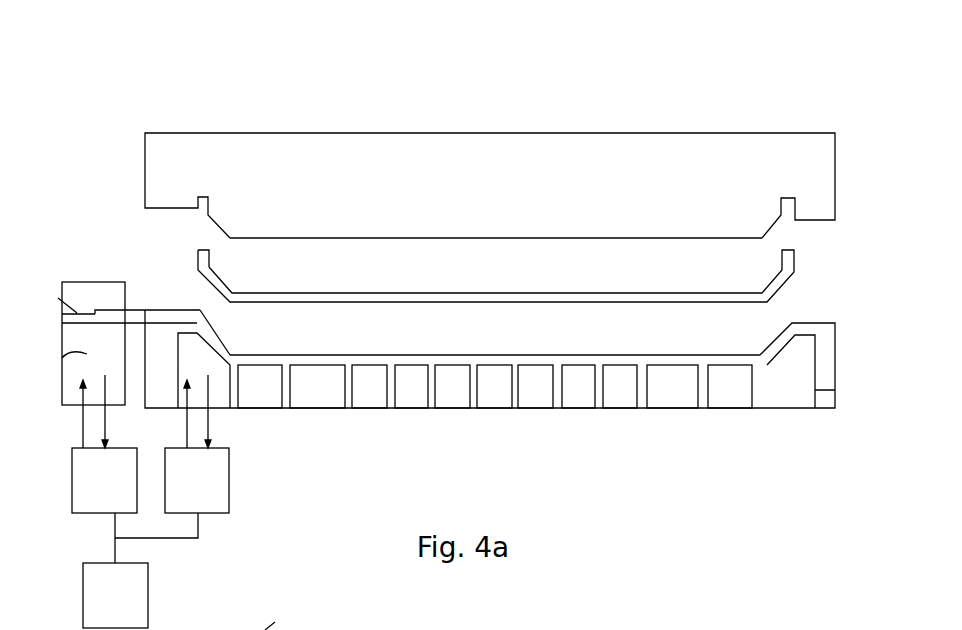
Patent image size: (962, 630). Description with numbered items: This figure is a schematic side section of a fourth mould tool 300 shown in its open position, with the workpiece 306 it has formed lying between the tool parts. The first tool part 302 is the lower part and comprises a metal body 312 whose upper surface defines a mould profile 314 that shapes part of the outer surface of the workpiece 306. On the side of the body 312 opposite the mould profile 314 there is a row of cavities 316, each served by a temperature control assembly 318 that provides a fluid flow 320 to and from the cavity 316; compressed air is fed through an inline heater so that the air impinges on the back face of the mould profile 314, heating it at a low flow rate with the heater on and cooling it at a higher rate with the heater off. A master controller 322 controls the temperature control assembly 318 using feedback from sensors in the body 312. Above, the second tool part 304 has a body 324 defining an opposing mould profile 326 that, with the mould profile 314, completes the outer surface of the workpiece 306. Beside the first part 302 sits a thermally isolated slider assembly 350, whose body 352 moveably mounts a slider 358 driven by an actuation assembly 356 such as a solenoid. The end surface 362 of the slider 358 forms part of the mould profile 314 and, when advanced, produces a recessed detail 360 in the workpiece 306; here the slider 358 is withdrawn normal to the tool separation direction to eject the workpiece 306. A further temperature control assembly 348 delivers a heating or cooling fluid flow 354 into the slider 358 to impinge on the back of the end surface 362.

The fourth mould tool 300 is at (772, 113).
The first tool part 302 is at (845, 363).
The second tool part 304 is at (850, 180).
The workpiece 306 is at (808, 263).
The body 312 is at (842, 395).
The mould profile 314 is at (377, 350).
The cavity 316 is at (217, 393).
The temperature control assembly 318 is at (197, 480).
The fluid flow 320 is at (230, 447).
The master controller 322 is at (140, 570).
The body 324 is at (490, 185).
The opposing mould profile 326 is at (380, 240).
The temperature control assembly 348 is at (104, 480).
The slider assembly 350 is at (52, 338).
The body 352 is at (62, 358).
The fluid flow 354 is at (88, 426).
The actuation assembly 356 is at (60, 303).
The slider 358 is at (147, 317).
The recessed detail 360 is at (200, 263).
The end surface 362 is at (210, 310).